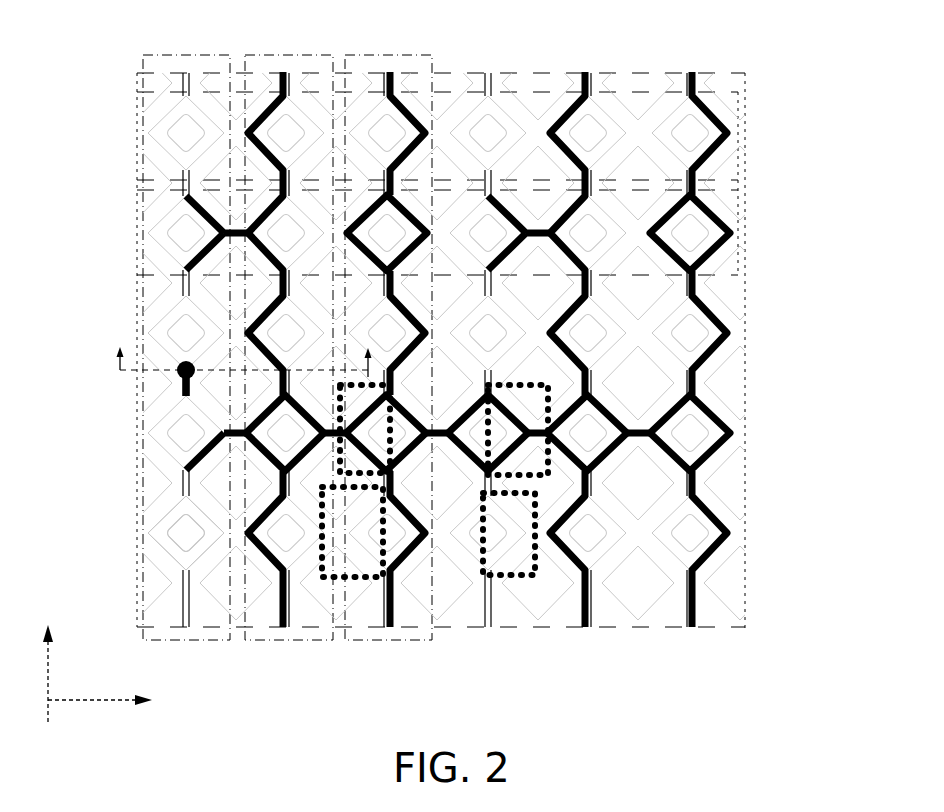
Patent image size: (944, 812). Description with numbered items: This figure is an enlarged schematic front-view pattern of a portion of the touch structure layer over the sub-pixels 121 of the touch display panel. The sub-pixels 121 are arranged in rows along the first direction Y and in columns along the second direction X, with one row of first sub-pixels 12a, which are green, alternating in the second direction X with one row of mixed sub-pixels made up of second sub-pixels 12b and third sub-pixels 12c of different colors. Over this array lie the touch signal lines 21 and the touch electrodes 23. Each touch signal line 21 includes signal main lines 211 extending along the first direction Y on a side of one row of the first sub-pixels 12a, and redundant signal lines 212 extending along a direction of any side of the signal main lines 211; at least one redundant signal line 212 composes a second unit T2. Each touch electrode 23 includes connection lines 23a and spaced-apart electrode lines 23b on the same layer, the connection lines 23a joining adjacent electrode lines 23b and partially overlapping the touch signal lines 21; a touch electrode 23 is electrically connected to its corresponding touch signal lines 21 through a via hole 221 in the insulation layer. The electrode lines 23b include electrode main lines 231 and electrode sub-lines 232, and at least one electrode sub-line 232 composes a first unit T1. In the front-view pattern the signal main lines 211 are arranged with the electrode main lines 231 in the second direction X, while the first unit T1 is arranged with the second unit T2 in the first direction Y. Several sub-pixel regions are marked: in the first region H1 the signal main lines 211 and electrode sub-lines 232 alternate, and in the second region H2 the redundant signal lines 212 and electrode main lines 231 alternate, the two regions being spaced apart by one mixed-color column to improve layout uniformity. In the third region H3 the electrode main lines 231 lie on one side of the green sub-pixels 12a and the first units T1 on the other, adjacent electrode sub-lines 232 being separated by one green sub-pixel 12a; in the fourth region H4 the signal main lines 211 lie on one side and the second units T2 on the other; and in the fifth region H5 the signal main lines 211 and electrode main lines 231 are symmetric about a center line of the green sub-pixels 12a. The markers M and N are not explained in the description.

The first region H1 is at (740, 193).
The second region H2 is at (738, 105).
The third region H3 is at (386, 55).
The fourth region H4 is at (183, 55).
The fifth region H5 is at (286, 55).
The touch signal line 21 is at (377, 350).
The signal main line 211 is at (160, 303).
The redundant signal line 212 is at (196, 351).
The via hole 221 is at (170, 386).
The sub-pixel 121 is at (395, 333).
The first sub-pixel 12a is at (183, 533).
The second sub-pixel 12b is at (237, 483).
The third sub-pixel 12c is at (237, 580).
The touch electrode 23 is at (536, 349).
The connection line 23a is at (632, 452).
The electrode line 23b is at (744, 432).
The electrode main line 231 is at (724, 449).
The electrode sub-line 232 is at (672, 432).
The first unit T1 is at (360, 475).
The second unit T2 is at (333, 580).
The first direction marker M is at (231, 358).
The second direction marker N is at (357, 360).
The second direction X is at (100, 685).
The first direction Y is at (58, 672).